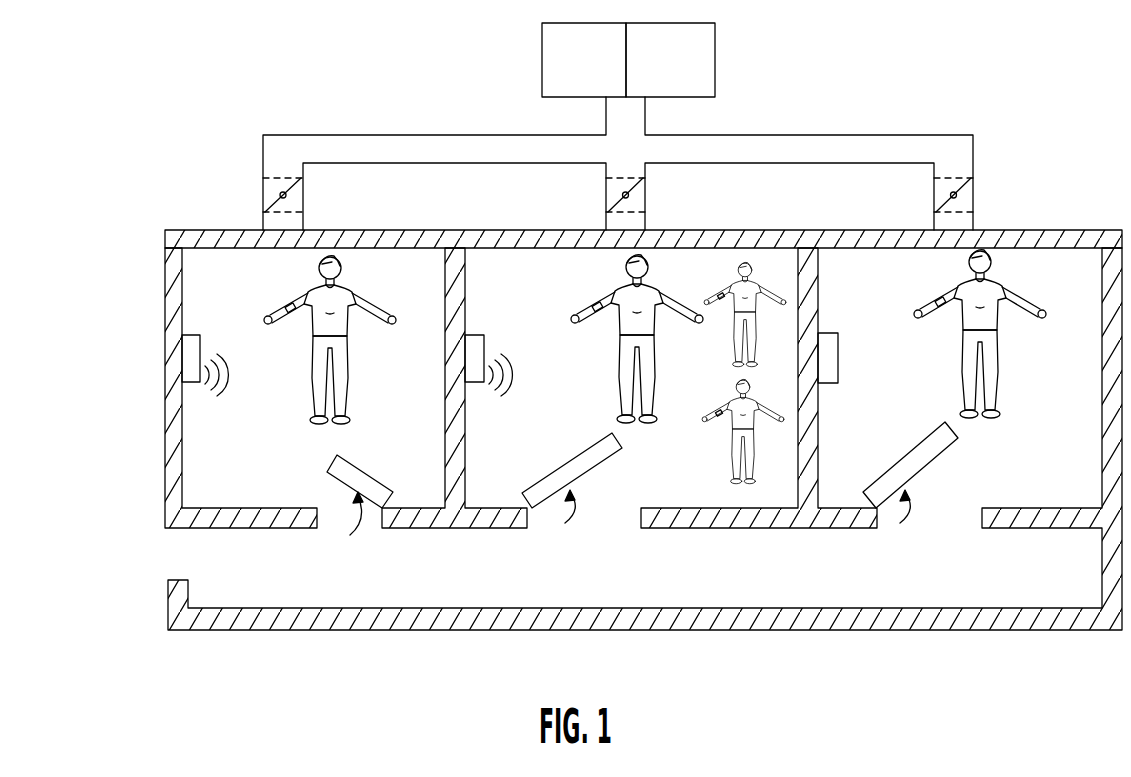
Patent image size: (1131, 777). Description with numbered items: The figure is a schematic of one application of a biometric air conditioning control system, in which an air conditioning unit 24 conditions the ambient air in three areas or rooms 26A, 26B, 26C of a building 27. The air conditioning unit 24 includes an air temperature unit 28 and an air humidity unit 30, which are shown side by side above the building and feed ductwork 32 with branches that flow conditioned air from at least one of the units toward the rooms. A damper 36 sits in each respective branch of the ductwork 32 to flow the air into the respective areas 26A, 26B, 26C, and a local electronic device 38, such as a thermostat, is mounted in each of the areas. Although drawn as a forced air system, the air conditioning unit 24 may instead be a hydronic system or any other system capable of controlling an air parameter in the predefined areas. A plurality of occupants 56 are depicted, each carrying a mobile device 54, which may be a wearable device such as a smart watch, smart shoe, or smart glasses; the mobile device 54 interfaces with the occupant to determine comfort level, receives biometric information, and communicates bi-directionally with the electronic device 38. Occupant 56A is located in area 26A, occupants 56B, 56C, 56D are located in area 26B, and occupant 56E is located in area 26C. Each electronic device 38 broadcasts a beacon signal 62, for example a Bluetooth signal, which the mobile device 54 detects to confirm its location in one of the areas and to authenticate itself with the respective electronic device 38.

The air conditioning unit 24 is at (662, 116).
The area 26A is at (435, 284).
The area 26B is at (508, 286).
The area 26C is at (862, 284).
The building 27 is at (618, 409).
The air temperature unit 28 is at (601, 74).
The air humidity unit 30 is at (681, 74).
The ductwork 32 is at (336, 135).
The damper 36 is at (303, 194).
The local electronic device 38 is at (200, 340).
The mobile device 54 is at (290, 312).
The occupant 56 is at (661, 336).
The occupant 56A is at (345, 333).
The occupant 56B is at (645, 288).
The occupant 56C is at (750, 284).
The occupant 56D is at (733, 460).
The occupant 56E is at (1000, 290).
The beacon signal 62 is at (222, 388).